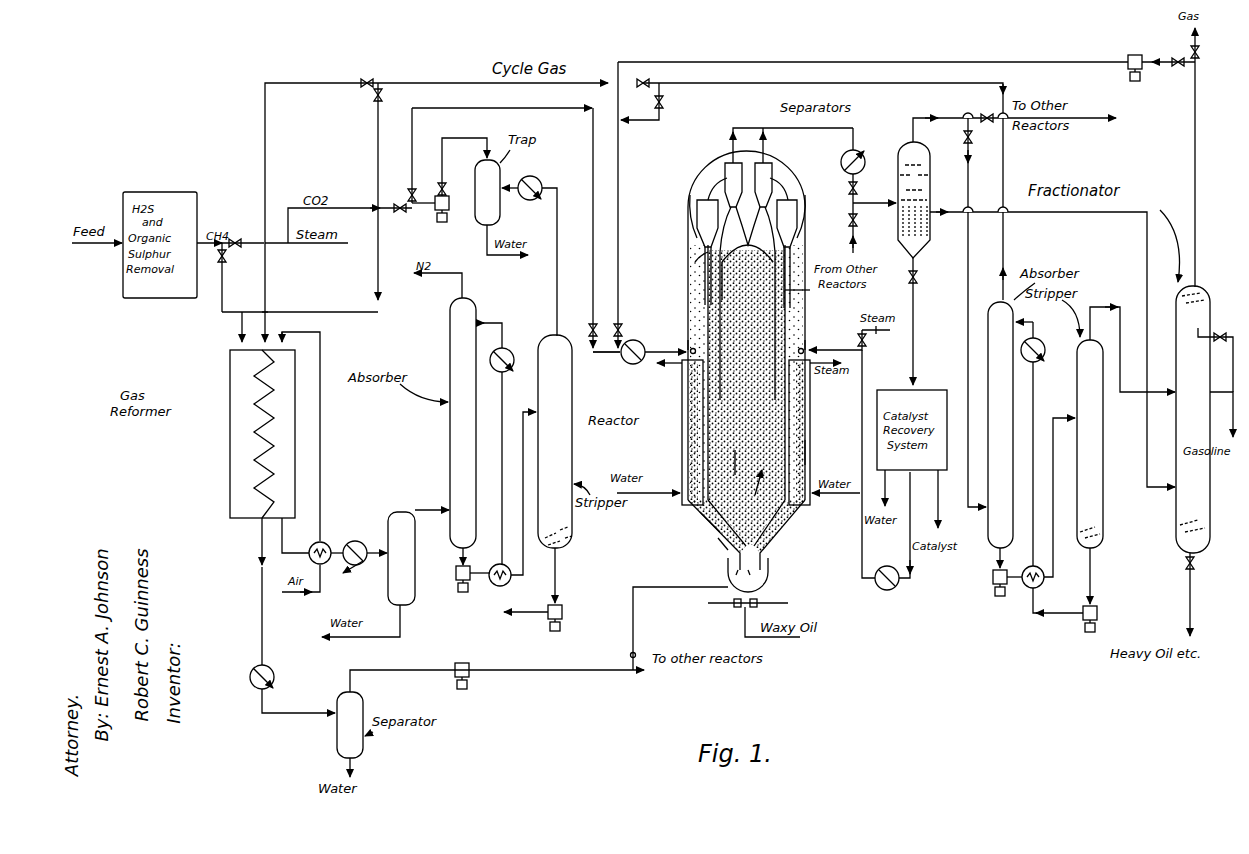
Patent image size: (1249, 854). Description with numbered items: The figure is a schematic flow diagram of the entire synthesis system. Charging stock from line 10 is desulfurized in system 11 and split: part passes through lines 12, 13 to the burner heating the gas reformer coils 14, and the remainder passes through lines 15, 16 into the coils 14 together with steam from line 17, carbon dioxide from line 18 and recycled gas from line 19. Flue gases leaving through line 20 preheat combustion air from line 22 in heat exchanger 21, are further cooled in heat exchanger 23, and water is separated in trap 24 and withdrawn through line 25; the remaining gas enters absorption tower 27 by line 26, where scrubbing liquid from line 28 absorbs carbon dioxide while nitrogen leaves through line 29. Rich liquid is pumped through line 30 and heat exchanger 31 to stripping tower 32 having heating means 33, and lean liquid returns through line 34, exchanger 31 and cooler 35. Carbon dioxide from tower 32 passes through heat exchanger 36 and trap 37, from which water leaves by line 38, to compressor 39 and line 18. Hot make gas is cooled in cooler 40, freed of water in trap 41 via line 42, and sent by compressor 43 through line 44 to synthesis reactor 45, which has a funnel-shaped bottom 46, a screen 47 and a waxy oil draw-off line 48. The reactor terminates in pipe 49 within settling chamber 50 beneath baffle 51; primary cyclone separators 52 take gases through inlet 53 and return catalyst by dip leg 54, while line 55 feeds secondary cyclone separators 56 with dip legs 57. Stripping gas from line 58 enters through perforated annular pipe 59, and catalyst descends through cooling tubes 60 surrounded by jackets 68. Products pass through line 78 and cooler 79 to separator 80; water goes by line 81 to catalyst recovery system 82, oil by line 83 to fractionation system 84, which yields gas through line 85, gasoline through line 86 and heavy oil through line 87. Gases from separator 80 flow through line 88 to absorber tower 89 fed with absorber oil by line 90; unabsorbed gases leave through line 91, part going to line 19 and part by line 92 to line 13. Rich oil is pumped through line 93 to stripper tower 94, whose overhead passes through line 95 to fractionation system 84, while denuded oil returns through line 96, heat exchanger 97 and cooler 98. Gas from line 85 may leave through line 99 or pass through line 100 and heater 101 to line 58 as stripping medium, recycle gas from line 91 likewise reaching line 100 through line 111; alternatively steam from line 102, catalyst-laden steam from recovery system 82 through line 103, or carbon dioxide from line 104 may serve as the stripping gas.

The charging stock line 10 is at (97, 252).
The desulfurization system 11 is at (183, 192).
The line 12 is at (222, 300).
The line 13 is at (242, 332).
The gas reformer coils 14 is at (250, 368).
The line 15 is at (248, 242).
The line 16 is at (265, 288).
The steam line 17 is at (316, 247).
The carbon dioxide line 18 is at (357, 218).
The recycled gas line 19 is at (265, 172).
The flue gas line 20 is at (283, 530).
The heat exchanger 21 is at (326, 542).
The air line 22 is at (322, 462).
The heat exchanger 23 is at (360, 566).
The trap 24 is at (392, 513).
The water withdrawal line 25 is at (372, 638).
The line 26 is at (425, 508).
The absorption tower 27 is at (450, 340).
The scrubbing liquid line 28 is at (506, 326).
The nitrogen line 29 is at (462, 290).
The rich scrubbing liquid line 30 is at (474, 582).
The heat exchanger 31 is at (498, 588).
The stripping tower 32 is at (572, 393).
The heating means 33 is at (566, 544).
The line 34 is at (555, 590).
The cooler 35 is at (511, 349).
The heat exchanger 36 is at (545, 181).
The trap 37 is at (503, 176).
The water line 38 is at (507, 250).
The compressor 39 is at (434, 211).
The cooler 40 is at (254, 665).
The trap 41 is at (336, 692).
The water line 42 is at (366, 760).
The compressor 43 is at (470, 679).
The make gas line 44 is at (636, 640).
The synthesis reactor 45 is at (712, 535).
The funnel-shaped bottom 46 is at (722, 555).
The screen 47 is at (766, 570).
The waxy oil line 48 is at (805, 638).
The pipe 49 is at (810, 292).
The settling chamber 50 is at (688, 270).
The baffle 51 is at (748, 242).
The primary cyclone separator 52 is at (702, 198).
The inlet 53 is at (697, 215).
The dip leg 54 is at (708, 255).
The line 55 is at (724, 175).
The secondary cyclone separator 56 is at (733, 148).
The dip leg 57 is at (720, 268).
The stripping gas line 58 is at (848, 350).
The perforated annular pipe 59 is at (688, 342).
The cooling tubes 60 is at (700, 402).
The jackets 68 is at (806, 452).
The overhead line 78 is at (786, 124).
The cooler 79 is at (841, 160).
The separator 80 is at (932, 158).
The water line 81 is at (914, 300).
The catalyst recovery system 82 is at (928, 390).
The oil line 83 is at (1098, 214).
The fractionation system 84 is at (1214, 334).
The gas line 85 is at (1194, 252).
The gasoline line 86 is at (1232, 400).
The heavy oil line 87 is at (1192, 594).
The line 88 is at (969, 165).
The absorber tower 89 is at (1007, 423).
The absorber oil line 90 is at (1030, 320).
The overhead gas line 91 is at (876, 88).
The line 92 is at (378, 140).
The rich oil line 93 is at (1053, 419).
The stripper tower 94 is at (1077, 388).
The overhead line 95 is at (1116, 384).
The line 96 is at (1092, 572).
The heat exchanger 97 is at (1028, 590).
The cooler 98 is at (1050, 433).
The gas withdrawal line 99 is at (1193, 40).
The line 100 is at (660, 192).
The heater 101 is at (620, 350).
The steam line 102 is at (855, 409).
The line 103 is at (862, 433).
The carbon dioxide line 104 is at (523, 109).
The line 111 is at (664, 108).